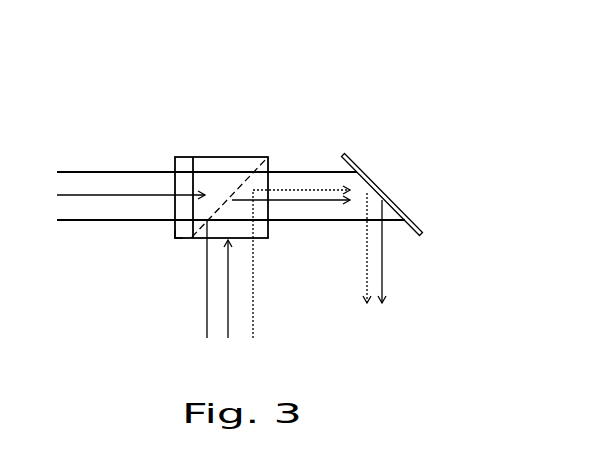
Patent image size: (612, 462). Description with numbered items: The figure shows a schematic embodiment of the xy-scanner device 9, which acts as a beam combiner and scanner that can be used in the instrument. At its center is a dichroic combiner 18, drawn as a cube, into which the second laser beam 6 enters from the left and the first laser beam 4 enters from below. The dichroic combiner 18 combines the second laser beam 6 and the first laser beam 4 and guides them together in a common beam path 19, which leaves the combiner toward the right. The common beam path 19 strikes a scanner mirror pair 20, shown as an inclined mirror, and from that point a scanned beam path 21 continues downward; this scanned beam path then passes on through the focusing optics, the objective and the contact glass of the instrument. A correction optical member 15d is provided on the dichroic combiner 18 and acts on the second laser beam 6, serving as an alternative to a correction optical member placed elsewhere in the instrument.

The xy-scanner device 9 is at (270, 90).
The second laser beam 6 is at (112, 170).
The dichroic combiner 18 is at (193, 157).
The correction optical member 15d is at (177, 238).
The first laser beam 4 is at (253, 262).
The common beam path 19 is at (311, 180).
The scanner mirror pair 20 is at (378, 187).
The scanned beam path 21 is at (382, 273).